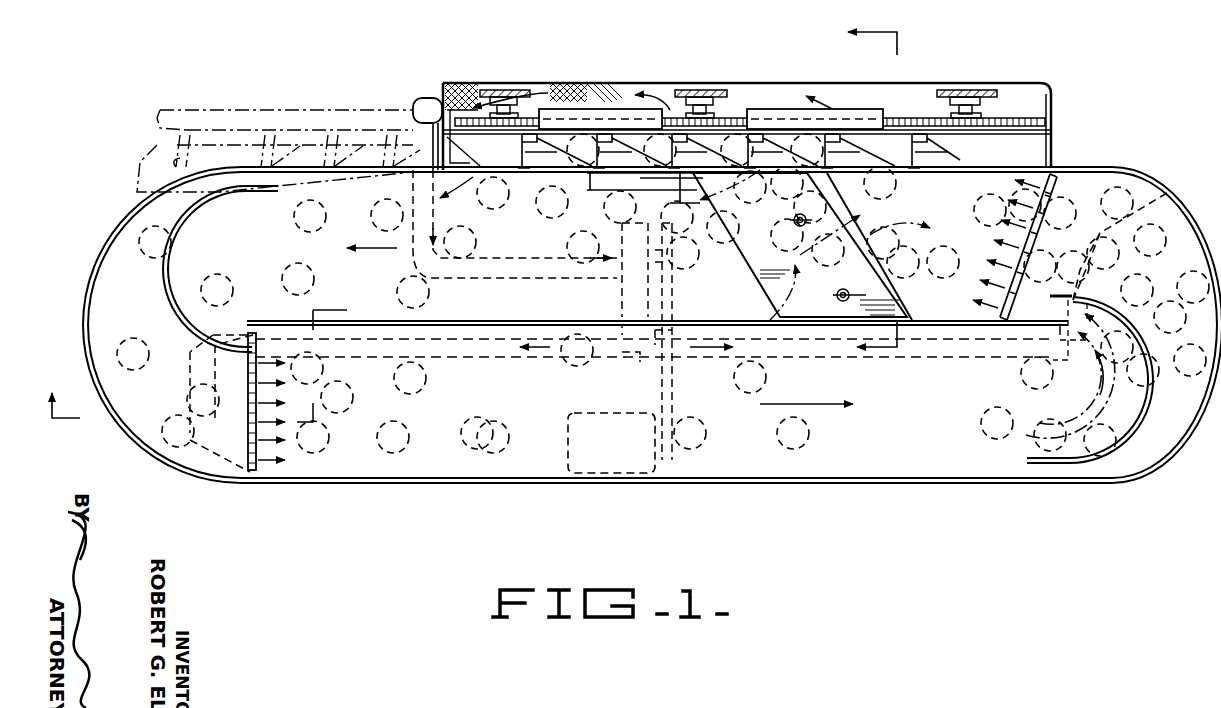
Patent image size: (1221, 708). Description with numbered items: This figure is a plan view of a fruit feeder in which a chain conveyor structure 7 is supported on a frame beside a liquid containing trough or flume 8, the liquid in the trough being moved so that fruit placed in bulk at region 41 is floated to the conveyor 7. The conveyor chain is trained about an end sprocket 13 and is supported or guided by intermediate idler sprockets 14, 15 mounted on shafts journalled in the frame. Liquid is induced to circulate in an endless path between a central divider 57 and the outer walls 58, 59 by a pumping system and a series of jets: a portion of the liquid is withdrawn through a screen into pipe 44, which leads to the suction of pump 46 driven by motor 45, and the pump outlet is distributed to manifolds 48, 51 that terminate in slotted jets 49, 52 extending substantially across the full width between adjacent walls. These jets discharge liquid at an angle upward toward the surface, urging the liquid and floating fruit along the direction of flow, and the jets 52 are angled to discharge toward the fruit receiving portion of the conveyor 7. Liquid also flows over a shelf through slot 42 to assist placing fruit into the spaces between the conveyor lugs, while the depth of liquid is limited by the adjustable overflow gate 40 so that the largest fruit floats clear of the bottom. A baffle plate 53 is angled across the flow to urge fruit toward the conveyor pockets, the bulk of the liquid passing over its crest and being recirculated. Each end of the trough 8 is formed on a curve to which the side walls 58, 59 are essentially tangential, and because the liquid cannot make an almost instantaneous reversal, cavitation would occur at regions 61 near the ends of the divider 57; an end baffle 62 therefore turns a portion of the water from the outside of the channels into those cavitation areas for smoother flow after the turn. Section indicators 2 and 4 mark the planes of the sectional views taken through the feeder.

The section line 2- 2 is at (62, 389).
The section line 4- 4 is at (861, 199).
The chain conveyor structure 7 is at (1022, 107).
The trough 8 is at (830, 487).
The sprocket 13 is at (1007, 127).
The idler sprocket 14 is at (723, 127).
The idler sprocket 15 is at (533, 114).
The overflow gate 40 is at (440, 100).
The region 41 is at (510, 473).
The slot 42 is at (798, 132).
The pipe 44 is at (540, 280).
The motor 45 is at (607, 473).
The pump 46 is at (620, 293).
The manifold 48 is at (187, 403).
The slotted jets 49 is at (257, 467).
The manifold 51 is at (1165, 205).
The slotted jets 52 is at (1050, 192).
The baffle plate 53 is at (775, 262).
The divider 57 is at (278, 318).
The outer wall 58 is at (430, 483).
The outer wall 59 is at (1050, 177).
The cavitation region 61 is at (270, 340).
The baffle 62 is at (160, 290).